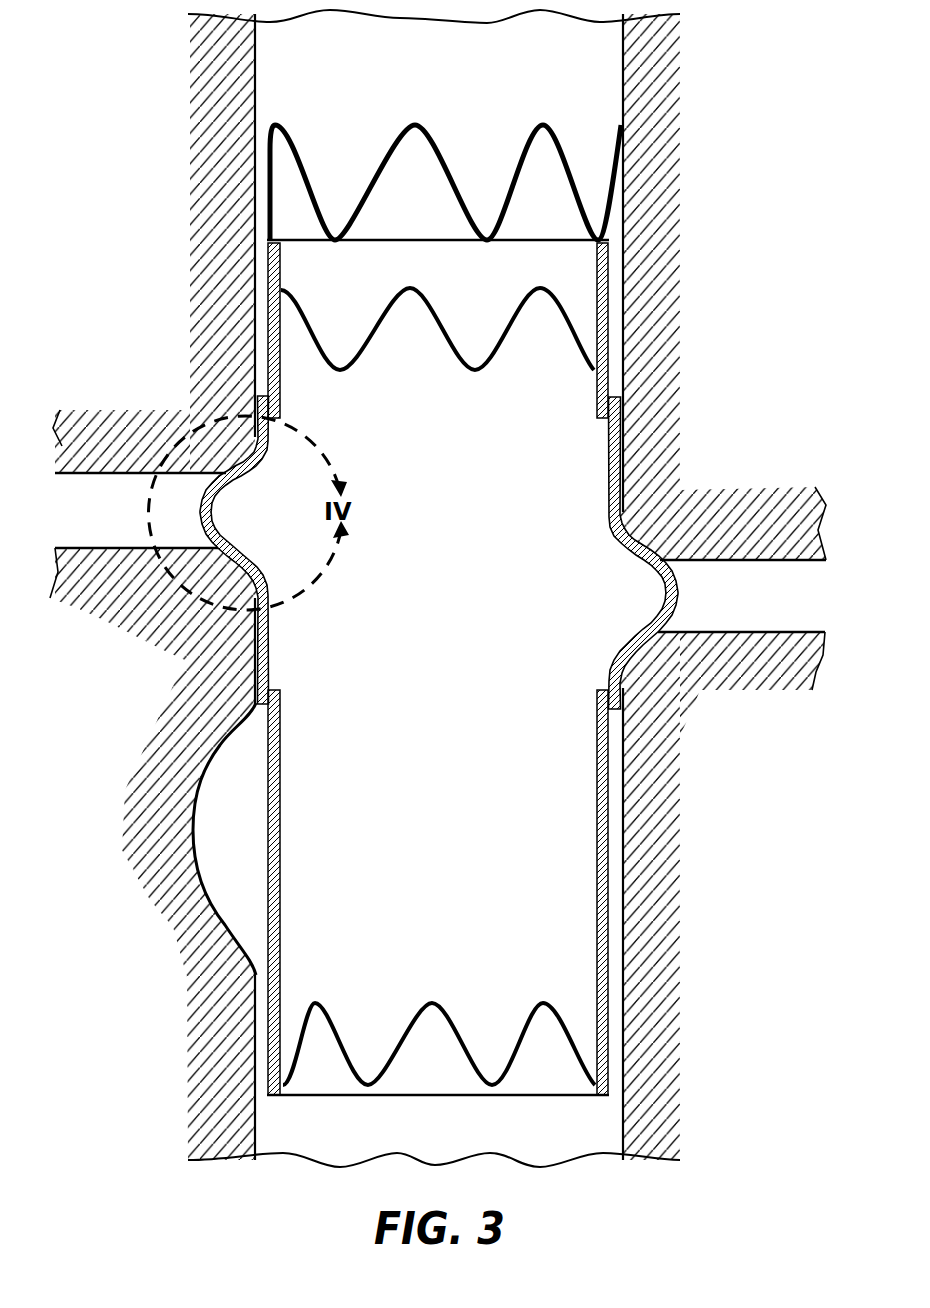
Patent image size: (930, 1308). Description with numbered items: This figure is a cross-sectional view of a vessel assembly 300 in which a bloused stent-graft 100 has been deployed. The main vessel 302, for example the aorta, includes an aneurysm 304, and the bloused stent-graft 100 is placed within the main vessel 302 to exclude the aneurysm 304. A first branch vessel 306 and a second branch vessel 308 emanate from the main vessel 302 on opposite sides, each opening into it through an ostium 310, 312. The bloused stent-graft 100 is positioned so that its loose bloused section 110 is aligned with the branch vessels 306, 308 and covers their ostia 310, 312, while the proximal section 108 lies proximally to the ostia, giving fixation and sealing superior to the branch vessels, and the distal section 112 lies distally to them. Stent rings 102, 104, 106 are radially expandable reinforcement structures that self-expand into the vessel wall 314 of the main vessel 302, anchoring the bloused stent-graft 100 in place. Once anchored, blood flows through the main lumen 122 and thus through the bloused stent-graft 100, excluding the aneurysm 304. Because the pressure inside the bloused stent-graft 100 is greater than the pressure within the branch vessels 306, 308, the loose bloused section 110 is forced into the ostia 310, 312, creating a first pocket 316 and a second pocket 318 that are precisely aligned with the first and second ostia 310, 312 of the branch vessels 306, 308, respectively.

The bloused stent-graft 100 is at (541, 465).
The stent ring 102 is at (567, 142).
The stent ring 104 is at (572, 318).
The stent ring 106 is at (568, 1018).
The proximal section 108 is at (612, 297).
The bloused section 110 is at (440, 540).
The distal section 112 is at (608, 823).
The main lumen 122 is at (461, 625).
The vessel assembly 300 is at (150, 1062).
The main vessel 302 is at (460, 95).
The aneurysm 304 is at (230, 826).
The first branch vessel 306 is at (119, 523).
The second branch vessel 308 is at (797, 602).
The ostium 310 is at (245, 455).
The ostium 312 is at (634, 527).
The vessel wall 314 is at (258, 106).
The pocket 316 is at (233, 510).
The pocket 318 is at (626, 597).